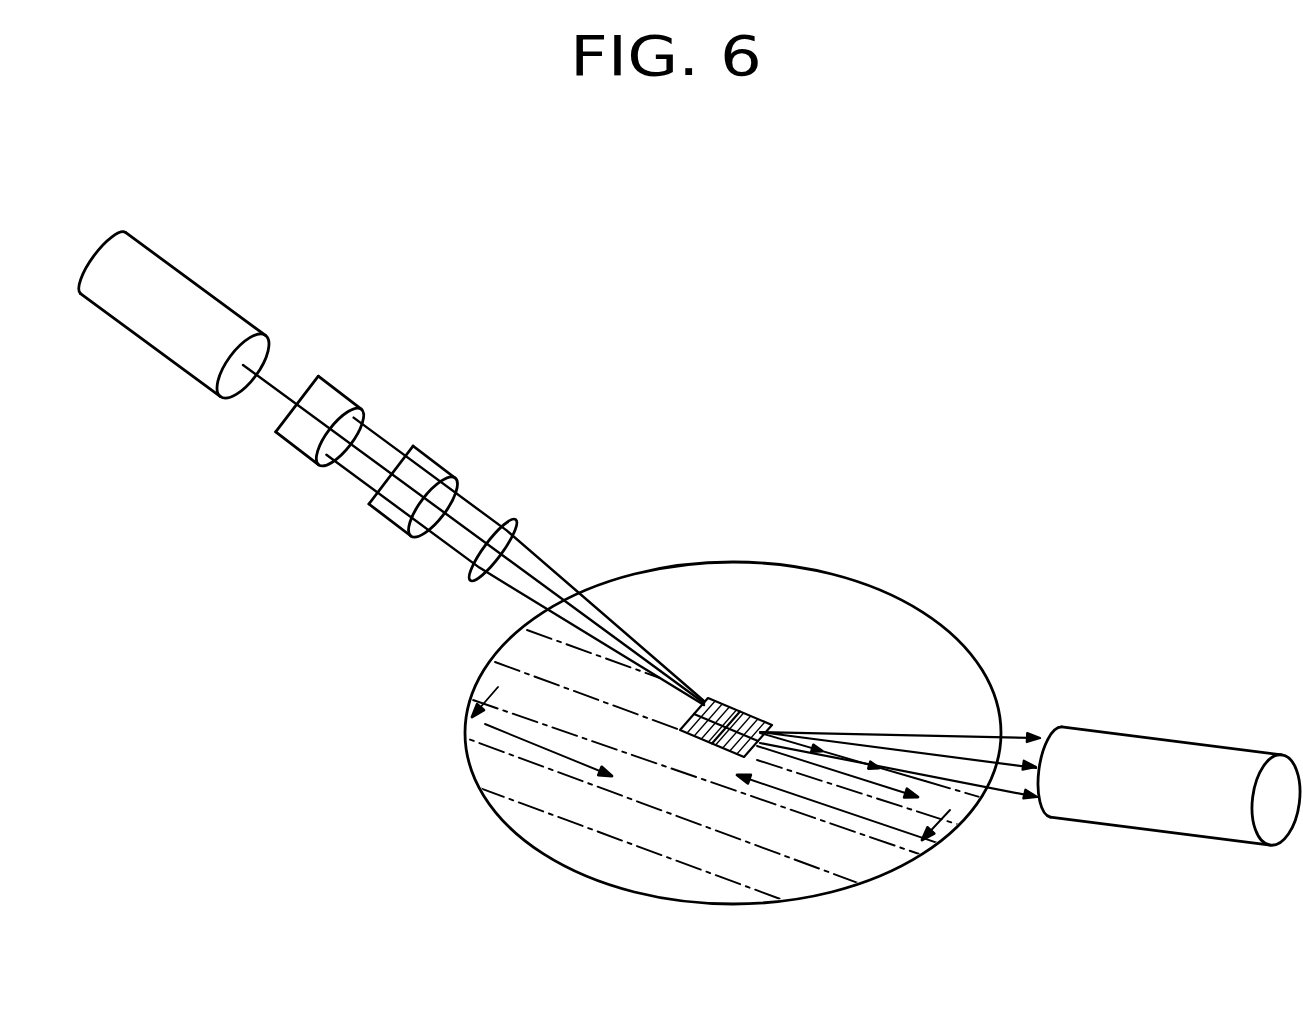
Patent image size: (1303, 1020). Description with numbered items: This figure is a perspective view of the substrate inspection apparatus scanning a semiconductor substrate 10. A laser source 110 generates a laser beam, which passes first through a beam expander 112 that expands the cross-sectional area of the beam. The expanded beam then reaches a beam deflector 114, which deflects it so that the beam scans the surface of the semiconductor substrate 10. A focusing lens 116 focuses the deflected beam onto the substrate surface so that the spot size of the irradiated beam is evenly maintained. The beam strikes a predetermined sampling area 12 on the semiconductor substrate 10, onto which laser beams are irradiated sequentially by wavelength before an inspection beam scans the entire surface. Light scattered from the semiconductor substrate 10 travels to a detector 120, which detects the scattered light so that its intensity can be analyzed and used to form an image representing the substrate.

The semiconductor substrate 10 is at (810, 573).
The sampling area 12 is at (738, 707).
The laser source 110 is at (222, 314).
The beam expander 112 is at (340, 398).
The beam deflector 114 is at (428, 462).
The focusing lens 116 is at (512, 517).
The detector 120 is at (1152, 741).